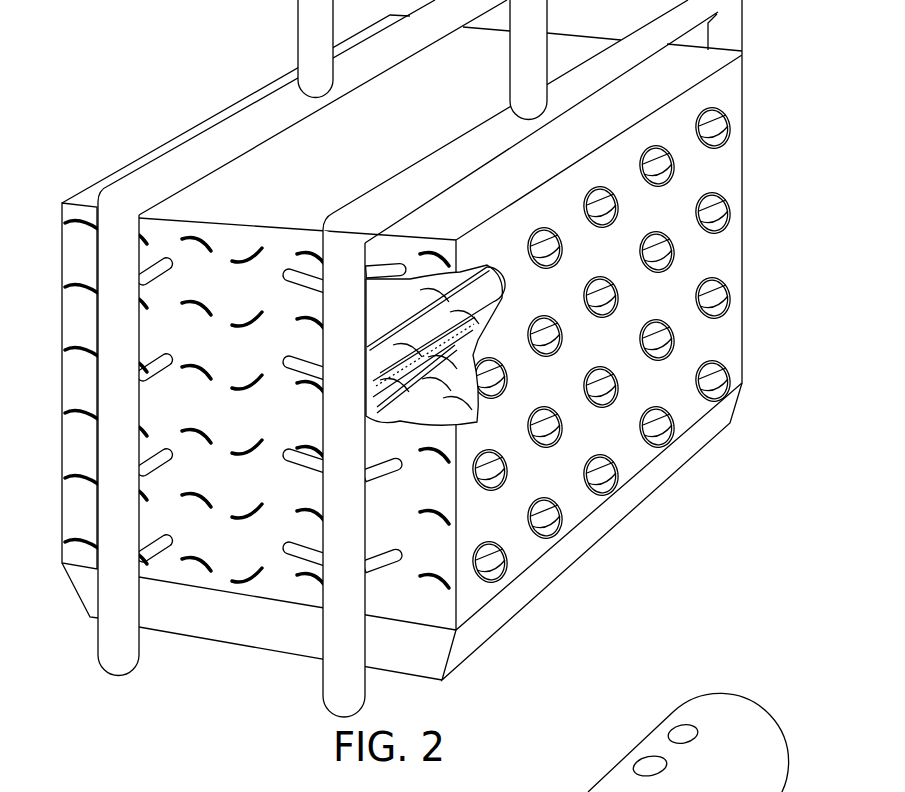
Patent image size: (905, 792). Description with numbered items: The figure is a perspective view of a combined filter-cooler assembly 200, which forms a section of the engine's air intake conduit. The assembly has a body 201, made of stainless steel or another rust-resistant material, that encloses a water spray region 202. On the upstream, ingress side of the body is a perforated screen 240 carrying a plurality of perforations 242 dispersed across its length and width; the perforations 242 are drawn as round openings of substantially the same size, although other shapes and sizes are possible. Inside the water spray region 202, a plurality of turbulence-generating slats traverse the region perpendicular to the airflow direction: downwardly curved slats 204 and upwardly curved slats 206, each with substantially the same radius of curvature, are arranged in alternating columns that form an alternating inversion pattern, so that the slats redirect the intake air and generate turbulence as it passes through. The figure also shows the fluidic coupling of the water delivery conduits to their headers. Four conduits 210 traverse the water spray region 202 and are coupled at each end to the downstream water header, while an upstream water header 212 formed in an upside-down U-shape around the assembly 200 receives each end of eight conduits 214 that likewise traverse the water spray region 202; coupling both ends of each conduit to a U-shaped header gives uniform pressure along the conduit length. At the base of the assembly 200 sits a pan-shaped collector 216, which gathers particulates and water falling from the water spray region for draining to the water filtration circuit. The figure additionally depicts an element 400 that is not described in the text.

The combined filter-cooler assembly 200 is at (207, 82).
The body 201 is at (88, 198).
The water spray region 202 is at (50, 268).
The downwardly curved slats 204 is at (481, 340).
The upwardly curved slats 206 is at (366, 384).
The conduits 210 is at (147, 360).
The upstream water header 212 is at (549, 41).
The conduits 214 is at (284, 256).
The collector 216 is at (521, 612).
The perforated screen 240 is at (726, 157).
The perforations 242 is at (726, 358).
The tube 400 is at (643, 737).